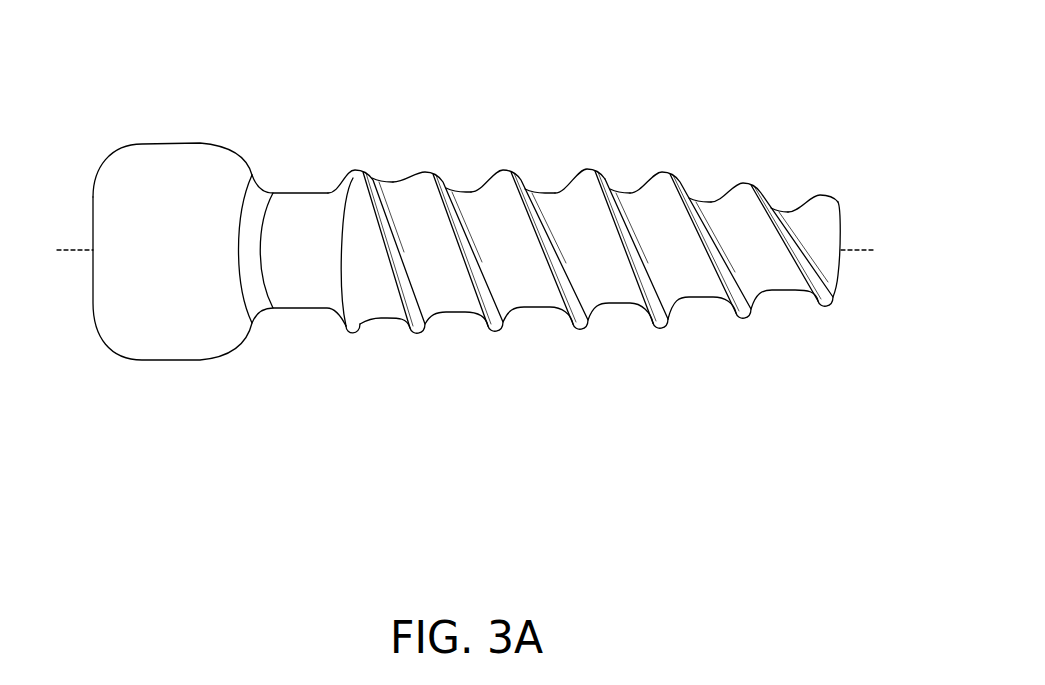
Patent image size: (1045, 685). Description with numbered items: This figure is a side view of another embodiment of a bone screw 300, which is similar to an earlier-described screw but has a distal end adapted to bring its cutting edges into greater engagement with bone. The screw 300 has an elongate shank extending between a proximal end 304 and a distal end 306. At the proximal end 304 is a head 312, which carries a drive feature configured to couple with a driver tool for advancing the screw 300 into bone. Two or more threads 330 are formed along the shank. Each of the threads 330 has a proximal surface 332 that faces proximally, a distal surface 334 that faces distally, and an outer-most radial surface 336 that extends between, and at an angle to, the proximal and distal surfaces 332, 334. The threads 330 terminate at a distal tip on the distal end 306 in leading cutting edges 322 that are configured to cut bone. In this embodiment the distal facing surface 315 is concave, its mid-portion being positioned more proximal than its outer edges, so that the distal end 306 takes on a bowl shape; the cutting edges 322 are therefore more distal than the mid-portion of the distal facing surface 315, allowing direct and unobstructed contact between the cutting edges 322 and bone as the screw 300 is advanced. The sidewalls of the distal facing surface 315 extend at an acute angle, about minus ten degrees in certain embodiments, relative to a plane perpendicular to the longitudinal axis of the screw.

The bone screw 300 is at (387, 88).
The proximal end 304 is at (222, 118).
The distal end 306 is at (805, 313).
The head 312 is at (162, 147).
The distal facing surface 315 is at (845, 268).
The leading cutting edges 322 is at (843, 212).
The threads 330 is at (583, 142).
The proximal surface 332 is at (580, 182).
The distal surface 334 is at (618, 192).
The outer-most radial surface 336 is at (598, 170).